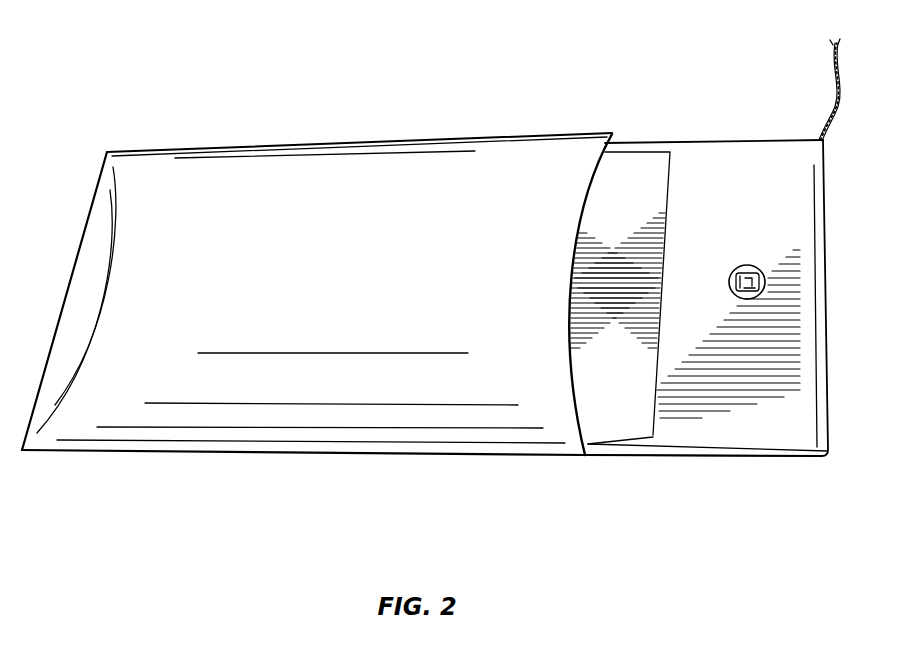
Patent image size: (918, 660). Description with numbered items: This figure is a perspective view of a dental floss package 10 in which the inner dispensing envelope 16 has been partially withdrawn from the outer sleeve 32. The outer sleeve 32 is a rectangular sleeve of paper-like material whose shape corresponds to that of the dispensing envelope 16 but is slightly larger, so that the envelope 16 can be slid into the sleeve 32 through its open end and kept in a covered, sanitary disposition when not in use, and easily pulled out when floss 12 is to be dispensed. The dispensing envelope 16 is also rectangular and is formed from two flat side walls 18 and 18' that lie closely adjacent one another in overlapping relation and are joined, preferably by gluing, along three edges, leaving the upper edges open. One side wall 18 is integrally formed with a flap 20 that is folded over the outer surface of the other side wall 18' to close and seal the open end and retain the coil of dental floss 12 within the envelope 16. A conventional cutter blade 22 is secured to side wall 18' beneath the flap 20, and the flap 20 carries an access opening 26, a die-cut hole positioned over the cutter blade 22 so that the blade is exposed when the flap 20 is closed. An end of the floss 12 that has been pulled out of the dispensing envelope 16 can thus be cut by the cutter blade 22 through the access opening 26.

The dental floss package 10 is at (444, 280).
The dental floss 12 is at (833, 92).
The dispensing envelope 16 is at (632, 185).
The side wall 18 is at (703, 488).
The side wall 18' is at (623, 476).
The flap 20 is at (742, 433).
The cutter blade 22 is at (765, 275).
The access opening 26 is at (747, 297).
The outer sleeve 32 is at (437, 188).